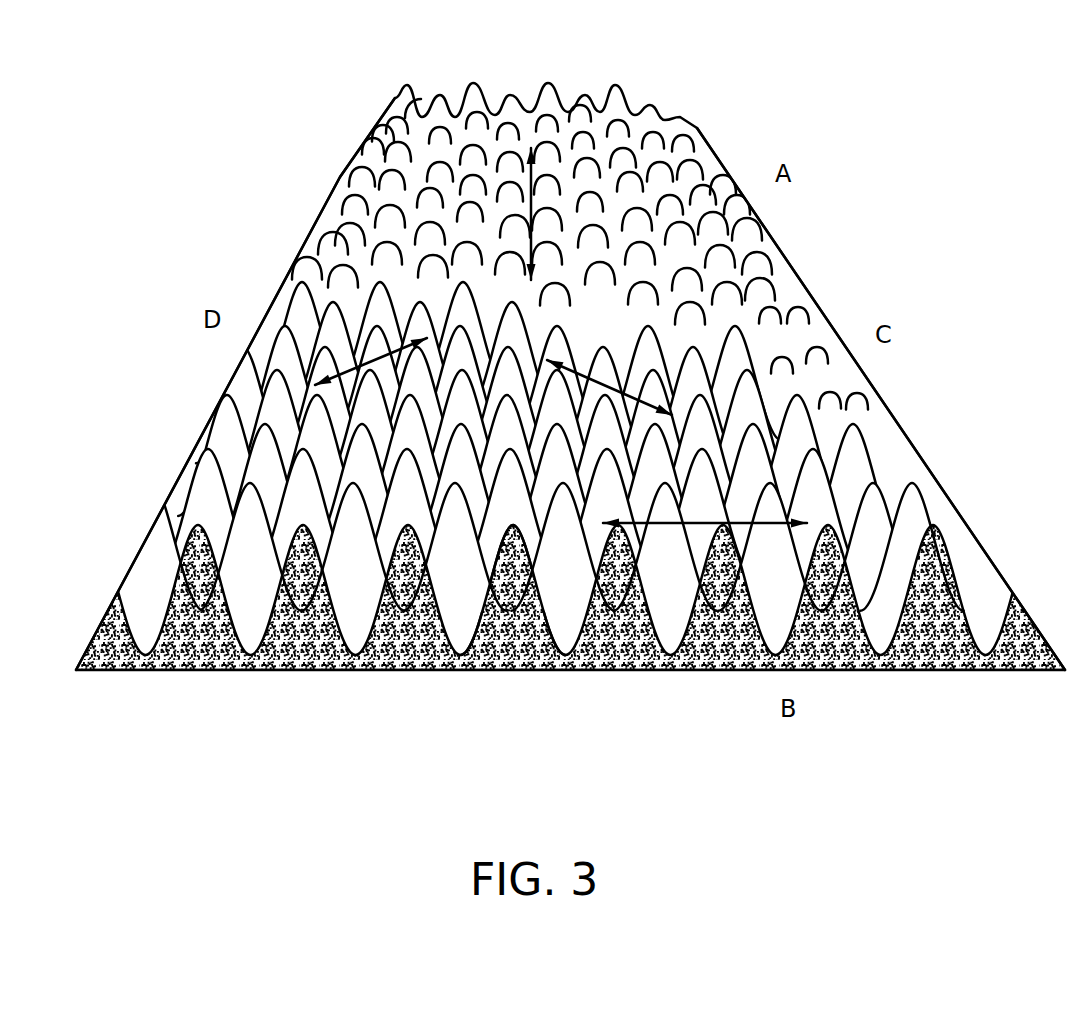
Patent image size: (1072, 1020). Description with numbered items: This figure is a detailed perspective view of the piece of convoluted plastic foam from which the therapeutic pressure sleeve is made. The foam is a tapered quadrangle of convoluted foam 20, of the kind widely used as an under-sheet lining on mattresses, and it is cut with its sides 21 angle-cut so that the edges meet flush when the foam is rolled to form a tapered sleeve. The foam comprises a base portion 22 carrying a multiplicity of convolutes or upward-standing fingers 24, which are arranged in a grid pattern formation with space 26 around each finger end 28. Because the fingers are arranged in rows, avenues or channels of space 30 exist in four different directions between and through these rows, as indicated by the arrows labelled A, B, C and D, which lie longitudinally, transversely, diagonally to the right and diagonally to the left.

The tapered quadrangle of convoluted foam 20 is at (275, 168).
The sides 21 is at (213, 403).
The base portion 22 is at (748, 670).
The fingers 24 is at (240, 497).
The space 26 is at (713, 330).
The finger end 28 is at (887, 482).
The channels of space 30 is at (412, 255).